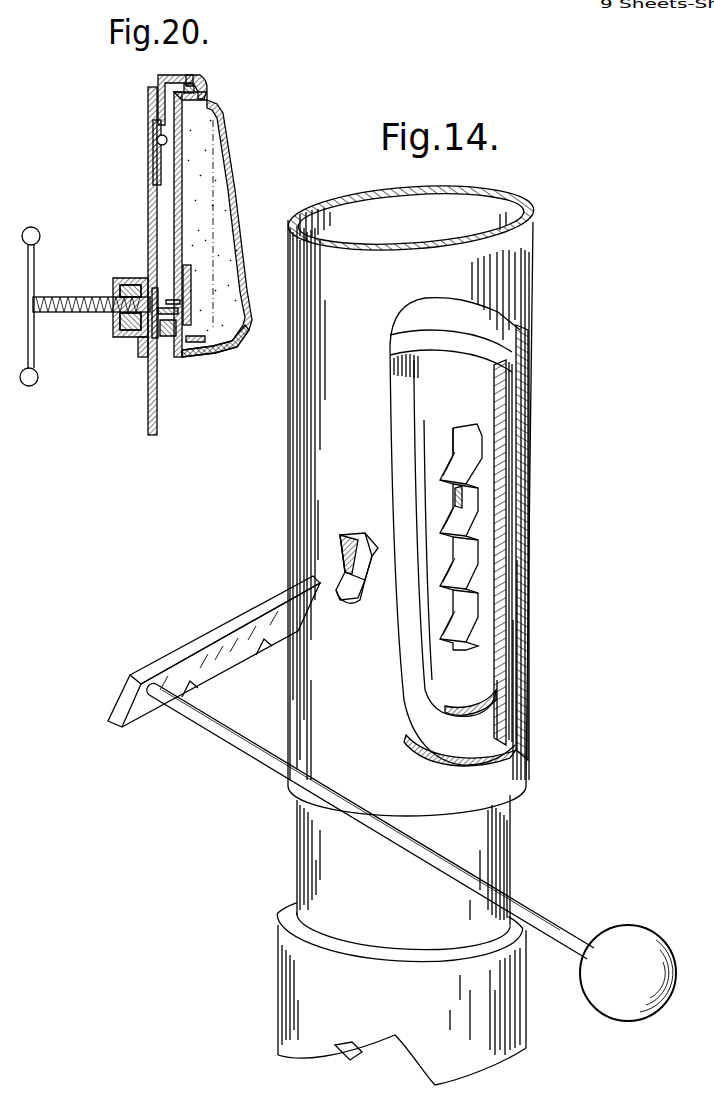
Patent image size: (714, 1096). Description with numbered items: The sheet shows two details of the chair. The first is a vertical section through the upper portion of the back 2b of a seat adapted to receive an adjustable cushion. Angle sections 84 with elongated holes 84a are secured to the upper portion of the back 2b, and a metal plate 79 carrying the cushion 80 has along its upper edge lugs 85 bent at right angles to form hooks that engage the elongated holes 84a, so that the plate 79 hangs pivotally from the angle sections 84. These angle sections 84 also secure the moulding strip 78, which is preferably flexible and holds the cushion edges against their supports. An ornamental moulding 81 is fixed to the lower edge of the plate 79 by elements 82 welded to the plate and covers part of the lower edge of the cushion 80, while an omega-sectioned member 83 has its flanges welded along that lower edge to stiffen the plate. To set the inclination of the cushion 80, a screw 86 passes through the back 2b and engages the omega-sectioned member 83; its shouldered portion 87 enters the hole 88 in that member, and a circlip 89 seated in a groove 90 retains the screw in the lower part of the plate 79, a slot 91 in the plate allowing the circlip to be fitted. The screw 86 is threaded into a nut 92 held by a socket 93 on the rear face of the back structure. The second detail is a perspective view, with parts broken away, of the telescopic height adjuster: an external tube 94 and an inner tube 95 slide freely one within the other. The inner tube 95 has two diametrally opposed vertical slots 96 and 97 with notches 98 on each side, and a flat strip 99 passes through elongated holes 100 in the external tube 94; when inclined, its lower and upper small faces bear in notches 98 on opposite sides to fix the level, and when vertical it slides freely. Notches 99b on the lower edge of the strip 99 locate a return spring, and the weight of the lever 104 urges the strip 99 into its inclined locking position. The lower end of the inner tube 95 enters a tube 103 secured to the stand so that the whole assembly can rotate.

In FIG. 20, the back 2b is at (148, 191).
In FIG. 20, the moulding strip 78 is at (207, 93).
In FIG. 20, the metal plate 79 is at (174, 218).
In FIG. 20, the cushion 80 is at (222, 165).
In FIG. 20, the ornamental moulding 81 is at (222, 350).
In FIG. 20, the elements 82 is at (192, 318).
In FIG. 20, the omega-sectioned member 83 is at (170, 338).
In FIG. 20, the angle sections 84 is at (151, 134).
In FIG. 20, the elongated holes 84a is at (165, 70).
In FIG. 20, the lugs 85 is at (188, 76).
In FIG. 20, the screw 86 is at (46, 312).
In FIG. 20, the shouldered portion 87 is at (138, 312).
In FIG. 20, the hole 88 is at (156, 336).
In FIG. 20, the circlip 89 is at (168, 318).
In FIG. 20, the groove 90 is at (170, 312).
In FIG. 20, the slot 91 is at (200, 338).
In FIG. 20, the nut 92 is at (126, 280).
In FIG. 20, the socket 93 is at (110, 292).
In FIG. 14, the external tube 94 is at (528, 305).
In FIG. 14, the inner tube 95 is at (510, 441).
In FIG. 14, the vertical slot 96 is at (452, 452).
In FIG. 14, the vertical slot 97 is at (364, 585).
In FIG. 14, the notches 98 is at (462, 497).
In FIG. 14, the flat strip 99 is at (196, 648).
In FIG. 14, the notches 99b is at (254, 672).
In FIG. 14, the elongated holes 100 is at (368, 535).
In FIG. 14, the tube 103 is at (300, 978).
In FIG. 14, the lever 104 is at (525, 908).